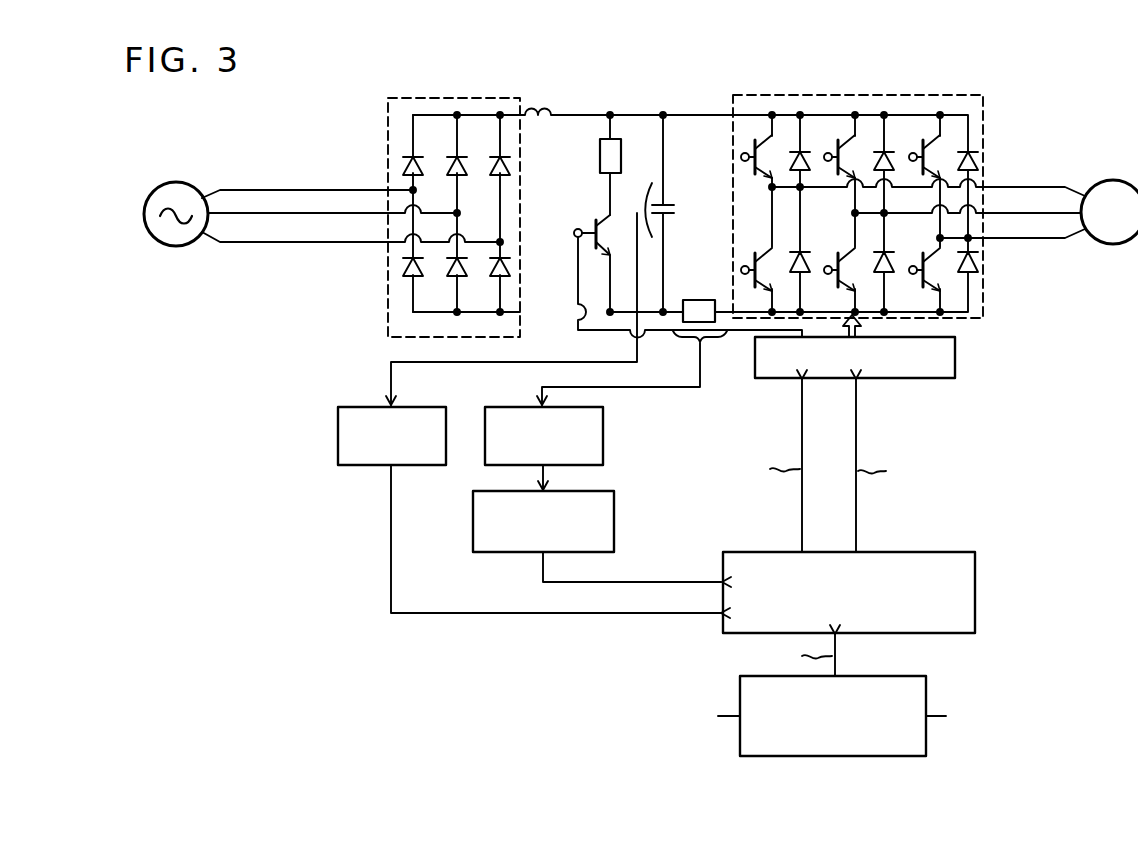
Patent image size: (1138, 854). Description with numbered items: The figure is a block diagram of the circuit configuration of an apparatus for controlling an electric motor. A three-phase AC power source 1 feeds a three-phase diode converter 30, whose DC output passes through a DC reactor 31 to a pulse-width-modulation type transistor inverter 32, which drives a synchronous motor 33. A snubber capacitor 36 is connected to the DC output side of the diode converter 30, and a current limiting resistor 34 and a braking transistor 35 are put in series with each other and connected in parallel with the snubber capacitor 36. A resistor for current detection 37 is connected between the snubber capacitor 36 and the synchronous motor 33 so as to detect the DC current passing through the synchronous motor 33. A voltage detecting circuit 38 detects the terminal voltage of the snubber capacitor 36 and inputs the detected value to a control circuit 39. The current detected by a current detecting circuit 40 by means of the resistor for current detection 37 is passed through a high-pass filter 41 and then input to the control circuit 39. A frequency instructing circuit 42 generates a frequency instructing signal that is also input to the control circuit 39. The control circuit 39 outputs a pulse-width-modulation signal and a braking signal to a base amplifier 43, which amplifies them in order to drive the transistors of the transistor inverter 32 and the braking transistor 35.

The three-phase AC power source 1 is at (189, 185).
The three-phase diode converter 30 is at (440, 98).
The DC reactor 31 is at (546, 105).
The transistor inverter 32 is at (878, 95).
The synchronous motor 33 is at (1106, 184).
The current limiting resistor 34 is at (616, 138).
The braking transistor 35 is at (591, 226).
The snubber capacitor 36 is at (675, 206).
The resistor for current detection 37 is at (693, 299).
The voltage detecting circuit 38 is at (412, 406).
The control circuit 39 is at (962, 552).
The current detecting circuit 40 is at (604, 431).
The high-pass filter 41 is at (616, 523).
The frequency instructing circuit 42 is at (928, 681).
The base amplifier 43 is at (958, 356).